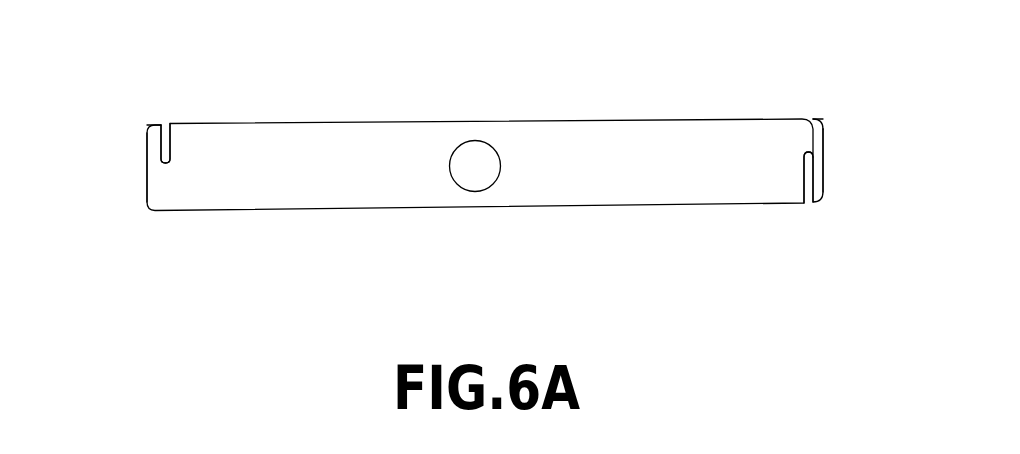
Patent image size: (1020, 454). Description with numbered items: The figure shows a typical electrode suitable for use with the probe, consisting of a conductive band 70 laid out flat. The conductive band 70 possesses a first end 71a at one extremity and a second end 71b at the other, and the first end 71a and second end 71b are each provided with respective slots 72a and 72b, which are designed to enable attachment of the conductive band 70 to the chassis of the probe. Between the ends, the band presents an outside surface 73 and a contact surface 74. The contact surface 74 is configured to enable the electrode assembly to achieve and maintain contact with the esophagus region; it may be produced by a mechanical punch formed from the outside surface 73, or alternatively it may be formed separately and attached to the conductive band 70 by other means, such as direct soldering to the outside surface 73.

The conductive band 70 is at (329, 75).
The first end 71a is at (823, 138).
The second end 71b is at (147, 180).
The slot 72a is at (808, 203).
The slot 72b is at (163, 127).
The outside surface 73 is at (637, 187).
The contact surface 74 is at (500, 177).